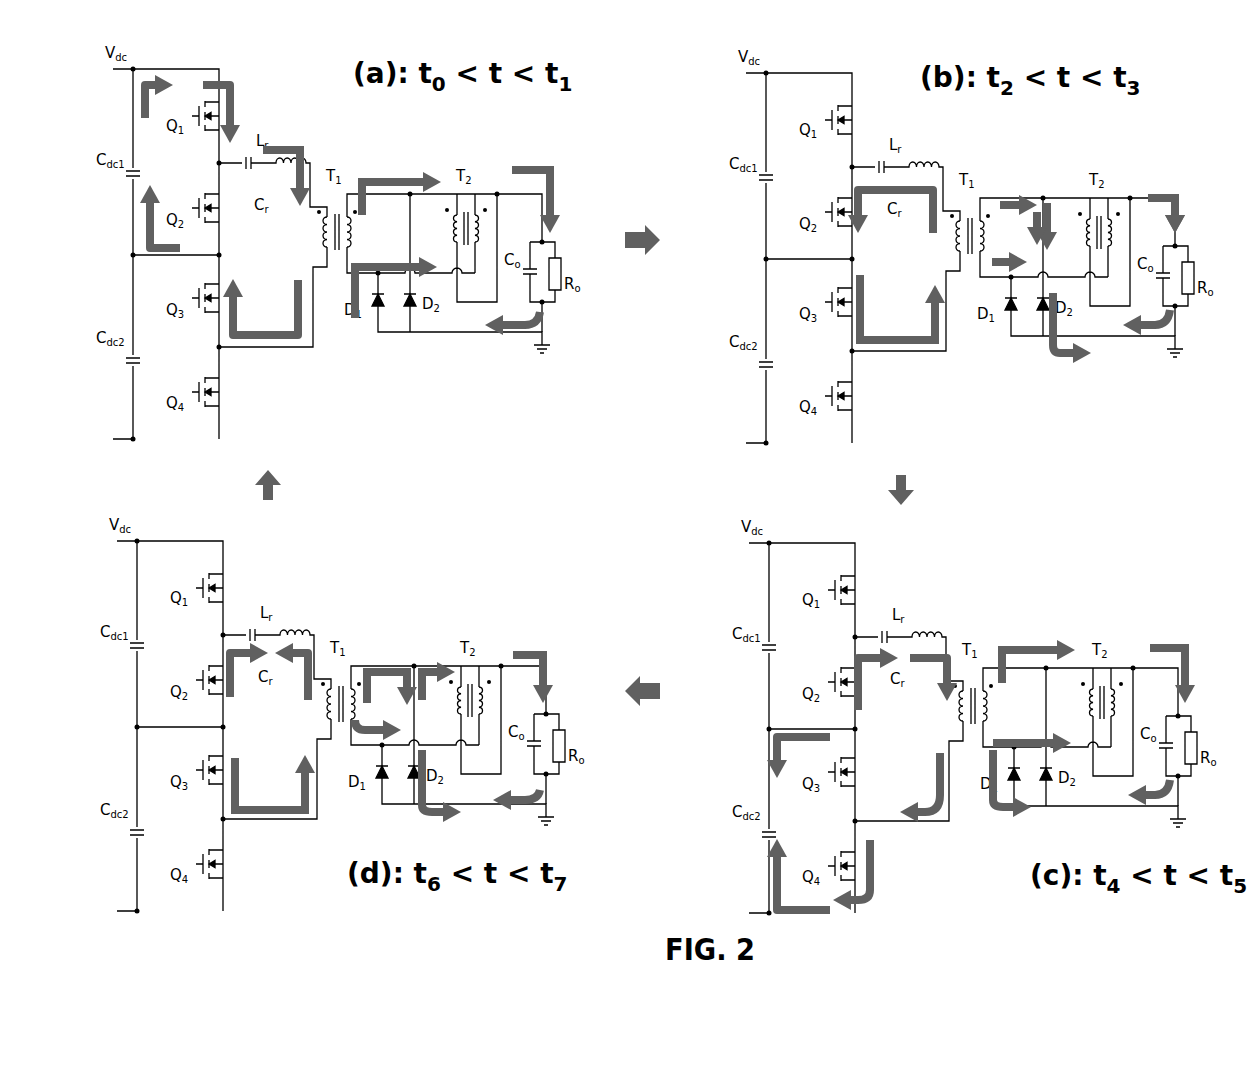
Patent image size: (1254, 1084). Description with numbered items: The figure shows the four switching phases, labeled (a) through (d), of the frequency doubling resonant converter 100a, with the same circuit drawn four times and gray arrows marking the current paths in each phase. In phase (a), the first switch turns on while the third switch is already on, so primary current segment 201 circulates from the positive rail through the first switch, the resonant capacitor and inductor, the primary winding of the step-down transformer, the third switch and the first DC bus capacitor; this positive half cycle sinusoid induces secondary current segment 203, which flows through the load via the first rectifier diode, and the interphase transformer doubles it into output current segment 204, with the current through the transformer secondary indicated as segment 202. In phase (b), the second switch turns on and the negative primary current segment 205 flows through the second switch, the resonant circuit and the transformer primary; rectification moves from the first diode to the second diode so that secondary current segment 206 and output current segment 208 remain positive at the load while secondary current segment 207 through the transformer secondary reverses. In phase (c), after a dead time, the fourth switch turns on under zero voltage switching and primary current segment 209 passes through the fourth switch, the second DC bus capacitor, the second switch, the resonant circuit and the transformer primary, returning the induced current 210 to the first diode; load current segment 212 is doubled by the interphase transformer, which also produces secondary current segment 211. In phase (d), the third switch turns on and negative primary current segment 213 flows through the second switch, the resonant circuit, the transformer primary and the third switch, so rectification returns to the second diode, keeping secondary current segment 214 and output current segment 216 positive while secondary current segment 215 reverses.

The resonant converter 100a is at (692, 422).
The primary current segment 201 is at (301, 147).
The current flow path through T1 secondary during t0-t1 202 is at (390, 180).
The secondary current segment 203 is at (426, 268).
The output current segment 204 is at (533, 165).
The primary current segment 205 is at (940, 352).
The secondary current segment 206 is at (1062, 205).
The secondary current segment 207 is at (1040, 197).
The output current segment 208 is at (1178, 196).
The primary current segment 209 is at (876, 893).
The induced current 210 is at (1052, 645).
The secondary current segment 211 is at (1065, 735).
The load current segment 212 is at (1178, 658).
The primary current segment 213 is at (258, 820).
The secondary current segment 214 is at (415, 665).
The secondary current segment 215 is at (392, 665).
The output current segment 216 is at (533, 658).